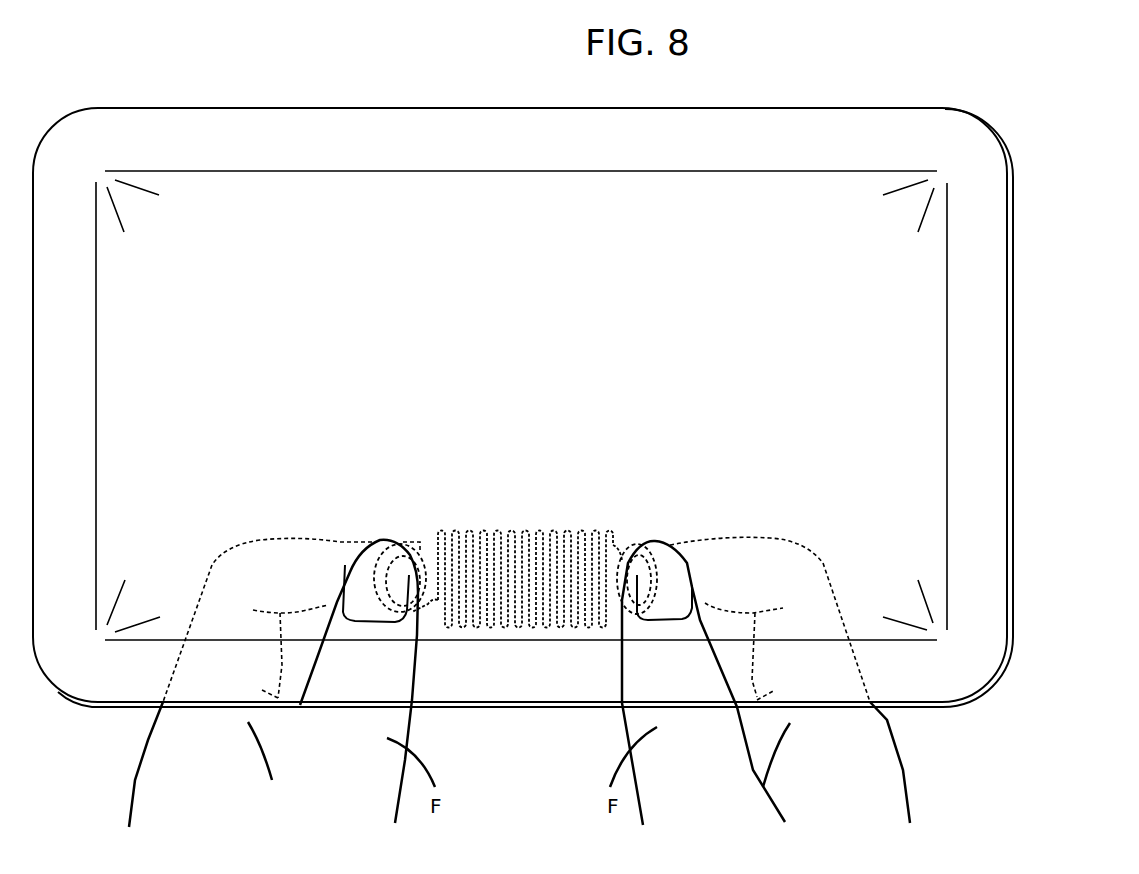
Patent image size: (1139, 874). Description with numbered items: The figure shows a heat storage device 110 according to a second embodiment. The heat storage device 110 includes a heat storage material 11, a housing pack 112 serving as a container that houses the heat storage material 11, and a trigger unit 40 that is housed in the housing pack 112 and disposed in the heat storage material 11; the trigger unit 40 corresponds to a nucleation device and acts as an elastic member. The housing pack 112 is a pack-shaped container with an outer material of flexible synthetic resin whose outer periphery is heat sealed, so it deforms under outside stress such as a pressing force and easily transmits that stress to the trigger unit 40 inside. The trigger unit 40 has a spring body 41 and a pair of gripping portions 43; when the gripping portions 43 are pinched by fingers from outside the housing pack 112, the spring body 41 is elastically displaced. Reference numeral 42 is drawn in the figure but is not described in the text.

The heat storage device 110 is at (572, 374).
The housing pack 112 is at (987, 395).
The heat storage material 11 is at (902, 530).
The trigger unit 40 is at (494, 631).
The spring body 41 is at (494, 631).
The coil winding 42 is at (547, 632).
The gripping portions 43 is at (622, 538).